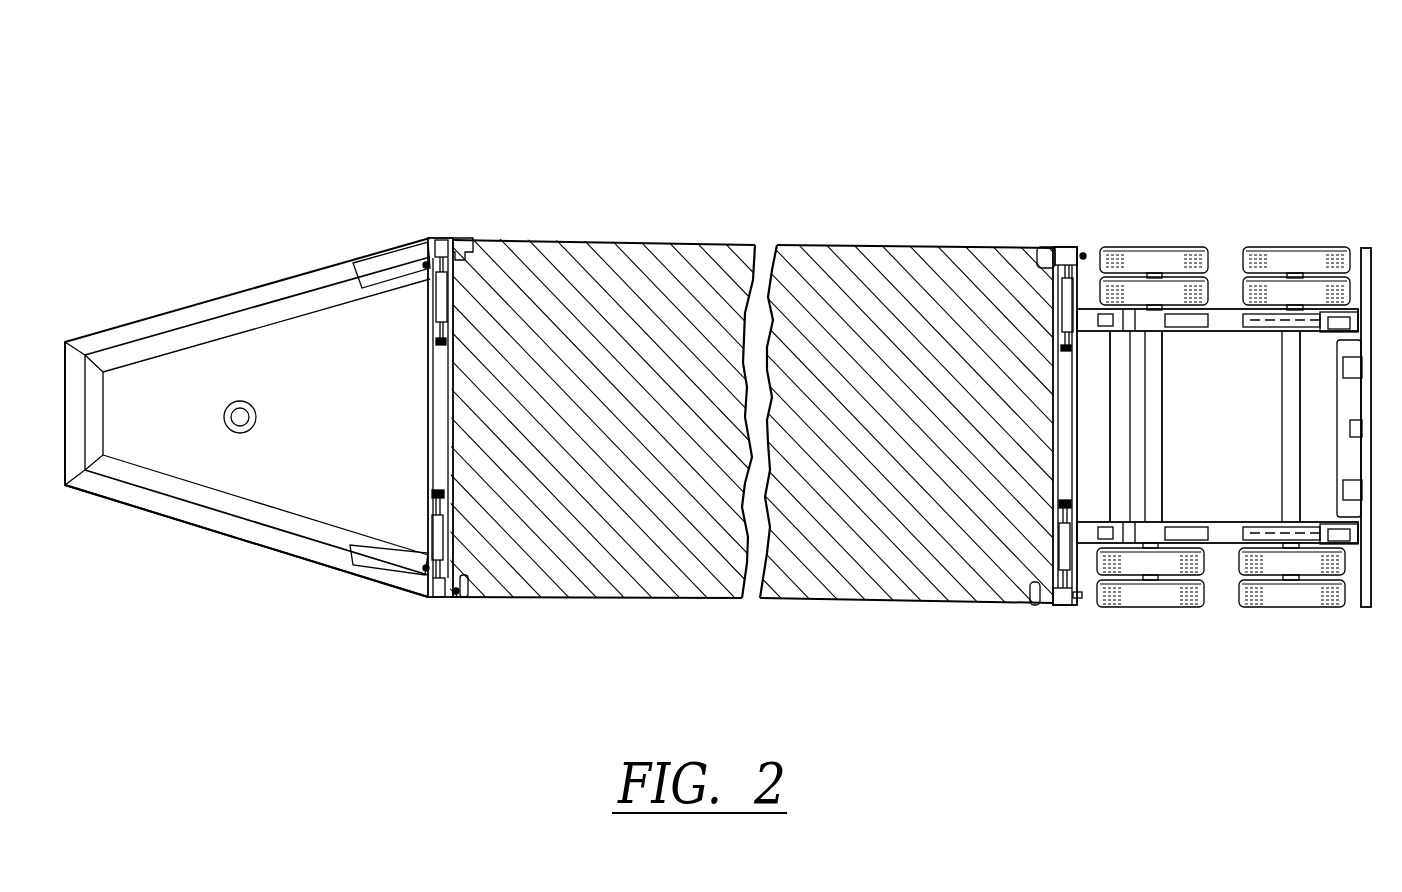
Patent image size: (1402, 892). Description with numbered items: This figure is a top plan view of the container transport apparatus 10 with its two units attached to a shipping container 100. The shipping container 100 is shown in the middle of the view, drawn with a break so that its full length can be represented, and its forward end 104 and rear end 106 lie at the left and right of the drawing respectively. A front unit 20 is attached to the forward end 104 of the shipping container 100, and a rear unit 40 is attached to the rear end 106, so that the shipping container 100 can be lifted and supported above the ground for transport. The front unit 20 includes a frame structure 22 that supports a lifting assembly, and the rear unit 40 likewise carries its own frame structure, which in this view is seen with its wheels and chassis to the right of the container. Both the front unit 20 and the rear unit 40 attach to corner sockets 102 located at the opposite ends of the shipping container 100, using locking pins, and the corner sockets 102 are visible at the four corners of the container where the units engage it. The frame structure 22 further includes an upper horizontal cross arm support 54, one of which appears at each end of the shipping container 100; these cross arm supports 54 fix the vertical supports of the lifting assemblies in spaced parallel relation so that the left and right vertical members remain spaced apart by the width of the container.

The container transport apparatus 10 is at (1224, 323).
The front unit 20 is at (286, 282).
The frame structure 22 is at (213, 518).
The rear unit 40 is at (1224, 298).
The upper horizontal cross arm support 54 is at (432, 431).
The shipping container 100 is at (868, 236).
The corner sockets 102 is at (477, 250).
The forward end 104 is at (452, 485).
The rear end 106 is at (1050, 516).